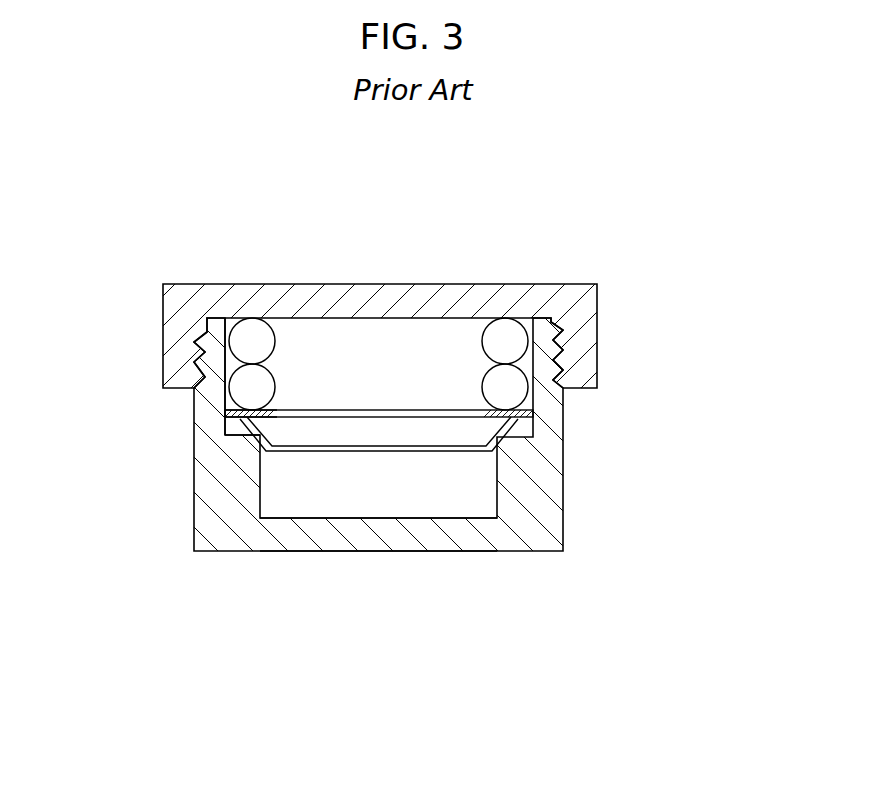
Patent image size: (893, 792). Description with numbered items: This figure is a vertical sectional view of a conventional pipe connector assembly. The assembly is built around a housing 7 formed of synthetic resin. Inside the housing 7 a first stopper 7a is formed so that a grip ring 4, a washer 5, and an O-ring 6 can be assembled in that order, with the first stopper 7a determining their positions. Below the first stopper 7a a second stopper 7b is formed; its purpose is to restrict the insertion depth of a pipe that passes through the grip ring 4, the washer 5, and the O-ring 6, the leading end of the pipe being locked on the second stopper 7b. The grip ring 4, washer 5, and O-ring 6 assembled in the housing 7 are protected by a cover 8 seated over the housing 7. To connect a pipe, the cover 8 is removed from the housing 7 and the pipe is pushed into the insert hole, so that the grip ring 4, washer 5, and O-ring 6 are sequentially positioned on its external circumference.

The cover 8 is at (415, 297).
The housing 7 is at (540, 500).
The first stopper 7a is at (535, 410).
The second stopper 7b is at (413, 517).
The O-ring 6 is at (512, 338).
The washer 5 is at (227, 411).
The grip ring 4 is at (240, 418).